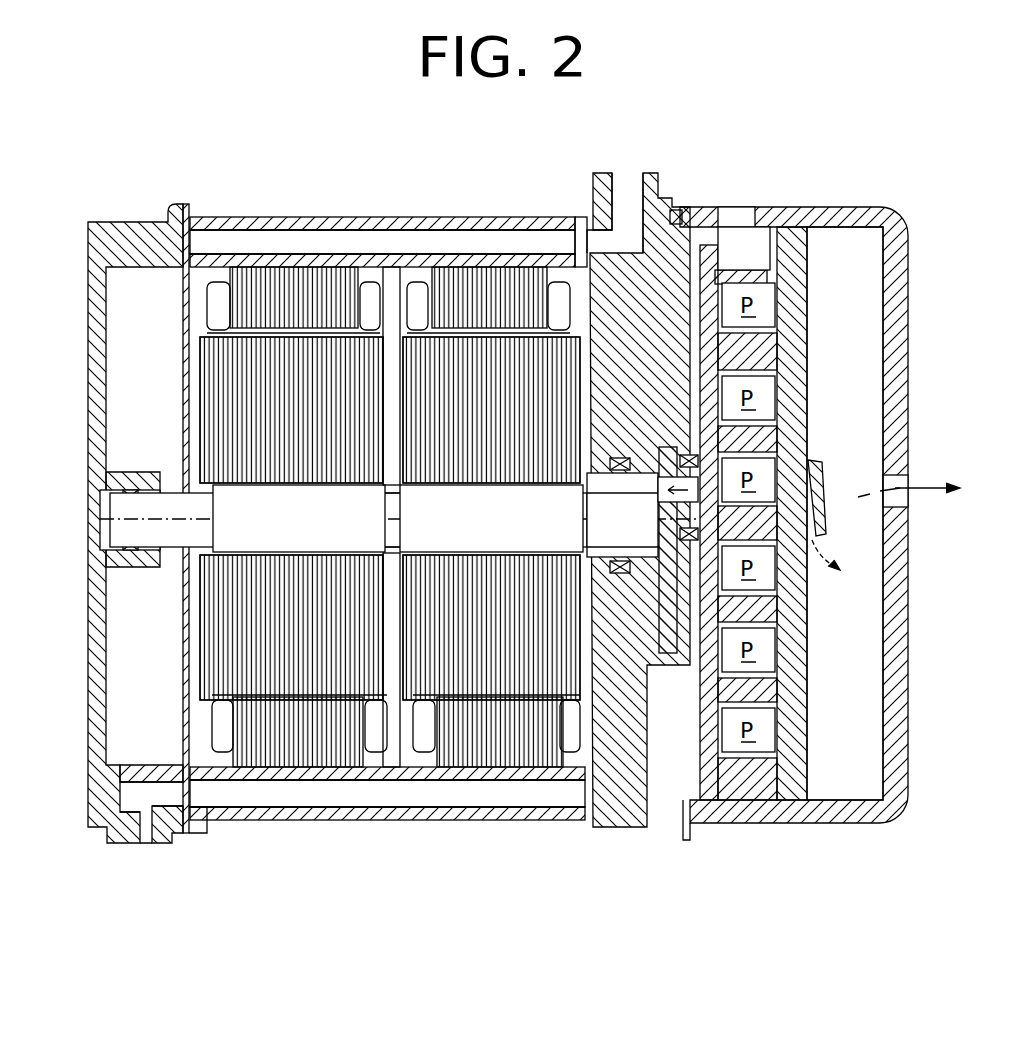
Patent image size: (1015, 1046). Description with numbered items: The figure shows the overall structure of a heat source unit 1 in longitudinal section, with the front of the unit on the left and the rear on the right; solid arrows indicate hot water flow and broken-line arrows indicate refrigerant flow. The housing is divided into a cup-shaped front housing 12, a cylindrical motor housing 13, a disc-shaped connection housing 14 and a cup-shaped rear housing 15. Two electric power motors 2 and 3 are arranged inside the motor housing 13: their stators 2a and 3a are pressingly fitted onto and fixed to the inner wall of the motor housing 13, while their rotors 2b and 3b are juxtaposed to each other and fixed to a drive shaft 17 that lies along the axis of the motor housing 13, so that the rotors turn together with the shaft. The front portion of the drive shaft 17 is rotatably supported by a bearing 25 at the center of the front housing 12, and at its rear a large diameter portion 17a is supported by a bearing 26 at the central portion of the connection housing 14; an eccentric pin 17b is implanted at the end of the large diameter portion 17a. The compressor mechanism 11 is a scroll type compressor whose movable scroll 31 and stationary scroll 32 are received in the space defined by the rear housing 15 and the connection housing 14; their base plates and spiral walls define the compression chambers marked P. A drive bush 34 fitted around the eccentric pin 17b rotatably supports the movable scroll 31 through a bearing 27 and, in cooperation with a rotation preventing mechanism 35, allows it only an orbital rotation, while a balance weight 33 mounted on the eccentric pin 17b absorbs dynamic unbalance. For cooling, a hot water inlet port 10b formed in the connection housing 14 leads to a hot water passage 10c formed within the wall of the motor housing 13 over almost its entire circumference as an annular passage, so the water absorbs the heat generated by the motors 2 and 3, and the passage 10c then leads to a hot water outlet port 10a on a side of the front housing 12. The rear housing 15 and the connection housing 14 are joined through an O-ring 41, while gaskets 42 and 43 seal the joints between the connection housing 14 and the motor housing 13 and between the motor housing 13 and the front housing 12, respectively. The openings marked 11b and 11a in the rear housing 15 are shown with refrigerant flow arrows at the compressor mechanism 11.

The heat source unit 1 is at (466, 195).
The motor 2 is at (514, 745).
The stator 2a is at (480, 735).
The rotor 2b is at (470, 668).
The motor 3 is at (306, 752).
The stator 3a is at (302, 672).
The rotor 3b is at (275, 668).
The hot water outlet port 10a is at (138, 850).
The hot water inlet port 10b is at (632, 160).
The hot water passage 10c is at (352, 236).
The compressor mechanism 11 is at (824, 360).
The pump outlet 11a is at (910, 492).
The pump inlet 11b is at (740, 205).
The front housing 12 is at (132, 222).
The motor housing 13 is at (286, 217).
The connection housing 14 is at (641, 829).
The rear housing 15 is at (783, 825).
The drive shaft 17 is at (180, 522).
The large diameter portion 17a is at (606, 500).
The eccentric pin 17b is at (665, 510).
The bearing 25 is at (133, 487).
The bearing 26 is at (622, 578).
The bearing 27 is at (806, 440).
The movable scroll 31 is at (757, 278).
The stationary scroll 32 is at (806, 270).
The balance weight 33 is at (670, 656).
The drive bush 34 is at (657, 519).
The rotation preventing mechanism 35 is at (708, 268).
The O-ring 41 is at (676, 209).
The gasket 42 is at (575, 218).
The gasket 43 is at (190, 215).